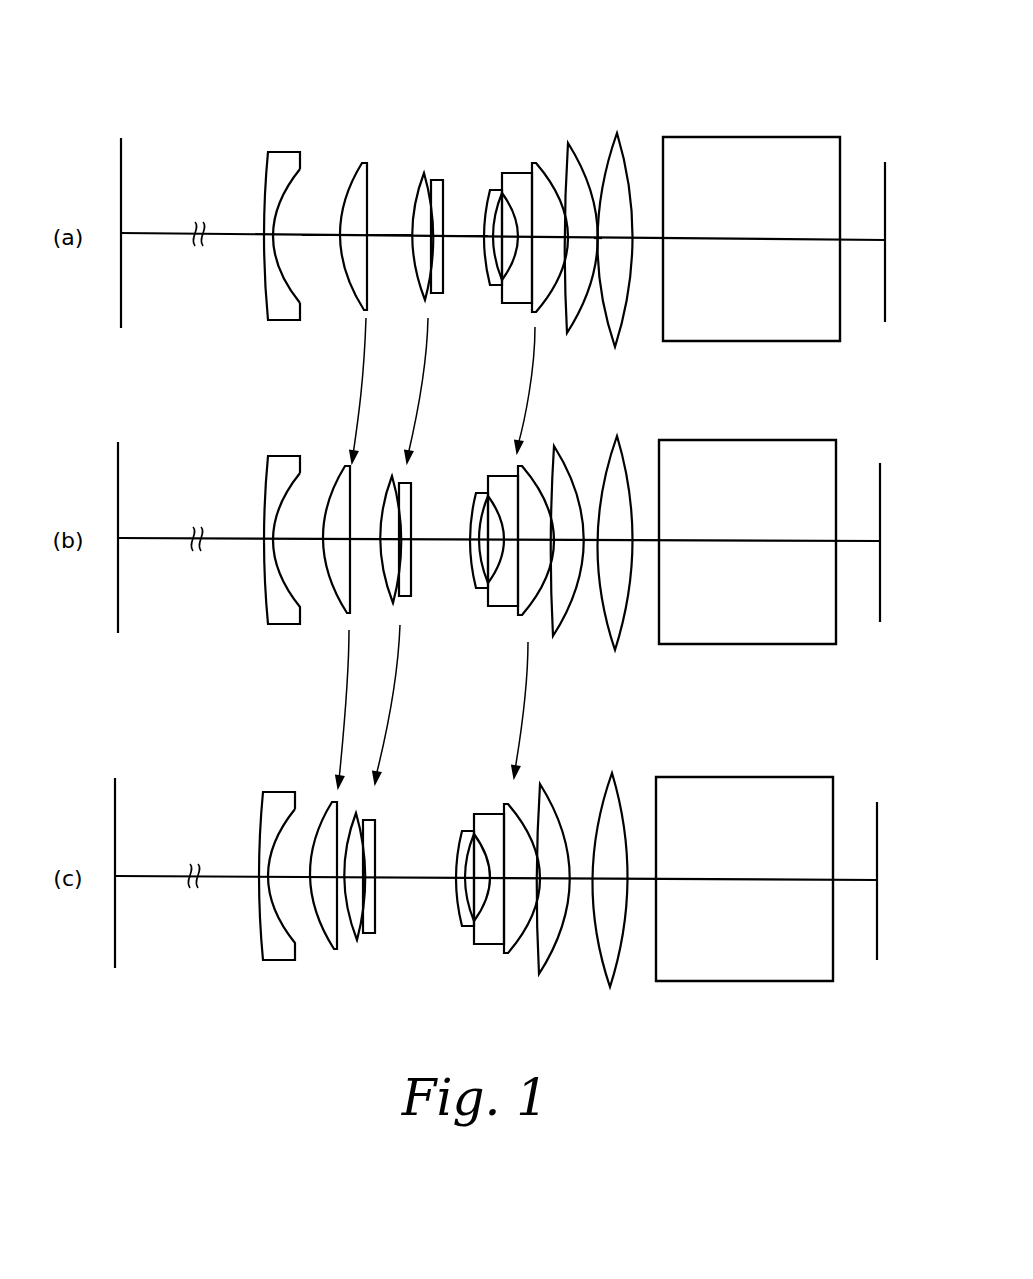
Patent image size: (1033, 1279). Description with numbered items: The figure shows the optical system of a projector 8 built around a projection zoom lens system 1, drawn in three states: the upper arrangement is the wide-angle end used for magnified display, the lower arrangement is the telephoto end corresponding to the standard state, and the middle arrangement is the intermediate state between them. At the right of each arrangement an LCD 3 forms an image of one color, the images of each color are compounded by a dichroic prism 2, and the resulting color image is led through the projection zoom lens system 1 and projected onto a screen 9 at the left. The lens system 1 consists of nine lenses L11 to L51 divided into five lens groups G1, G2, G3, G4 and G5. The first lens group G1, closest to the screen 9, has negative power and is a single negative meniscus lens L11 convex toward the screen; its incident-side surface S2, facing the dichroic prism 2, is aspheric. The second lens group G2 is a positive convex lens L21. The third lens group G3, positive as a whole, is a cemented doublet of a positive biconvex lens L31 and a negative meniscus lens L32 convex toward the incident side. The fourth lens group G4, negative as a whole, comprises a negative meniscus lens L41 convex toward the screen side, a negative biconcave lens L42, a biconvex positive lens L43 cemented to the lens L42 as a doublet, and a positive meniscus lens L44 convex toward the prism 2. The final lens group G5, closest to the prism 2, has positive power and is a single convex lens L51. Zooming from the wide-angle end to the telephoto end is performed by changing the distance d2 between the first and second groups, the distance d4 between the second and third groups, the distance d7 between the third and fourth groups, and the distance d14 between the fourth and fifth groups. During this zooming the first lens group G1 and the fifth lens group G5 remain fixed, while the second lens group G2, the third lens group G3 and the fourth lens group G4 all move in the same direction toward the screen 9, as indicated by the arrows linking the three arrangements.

The projection zoom lens system 1 is at (243, 169).
The dichroic prism 2 is at (775, 155).
The LCD 3 is at (885, 178).
The projector 8 is at (733, 80).
The screen 9 is at (121, 179).
The first lens group G1 is at (271, 160).
The second lens group G2 is at (330, 155).
The third lens group G3 is at (418, 150).
The fourth lens group G4 is at (556, 167).
The fifth lens group G5 is at (643, 174).
The negative meniscus lens L11 is at (274, 182).
The convex lens L21 is at (362, 163).
The positive biconvex lens L31 is at (425, 173).
The negative meniscus lens L32 is at (435, 180).
The negative meniscus lens L41 is at (500, 188).
The negative biconcave lens L42 is at (513, 179).
The biconvex positive lens L43 is at (540, 166).
The positive meniscus lens L44 is at (597, 203).
The convex lens L51 is at (618, 132).
The aspheric surface S2 is at (287, 187).
The distance between first and second lens groups d2 is at (310, 238).
The distance between second and third lens groups d4 is at (383, 238).
The distance between third and fourth lens groups d7 is at (457, 238).
The distance between fourth and fifth lens groups d14 is at (598, 241).